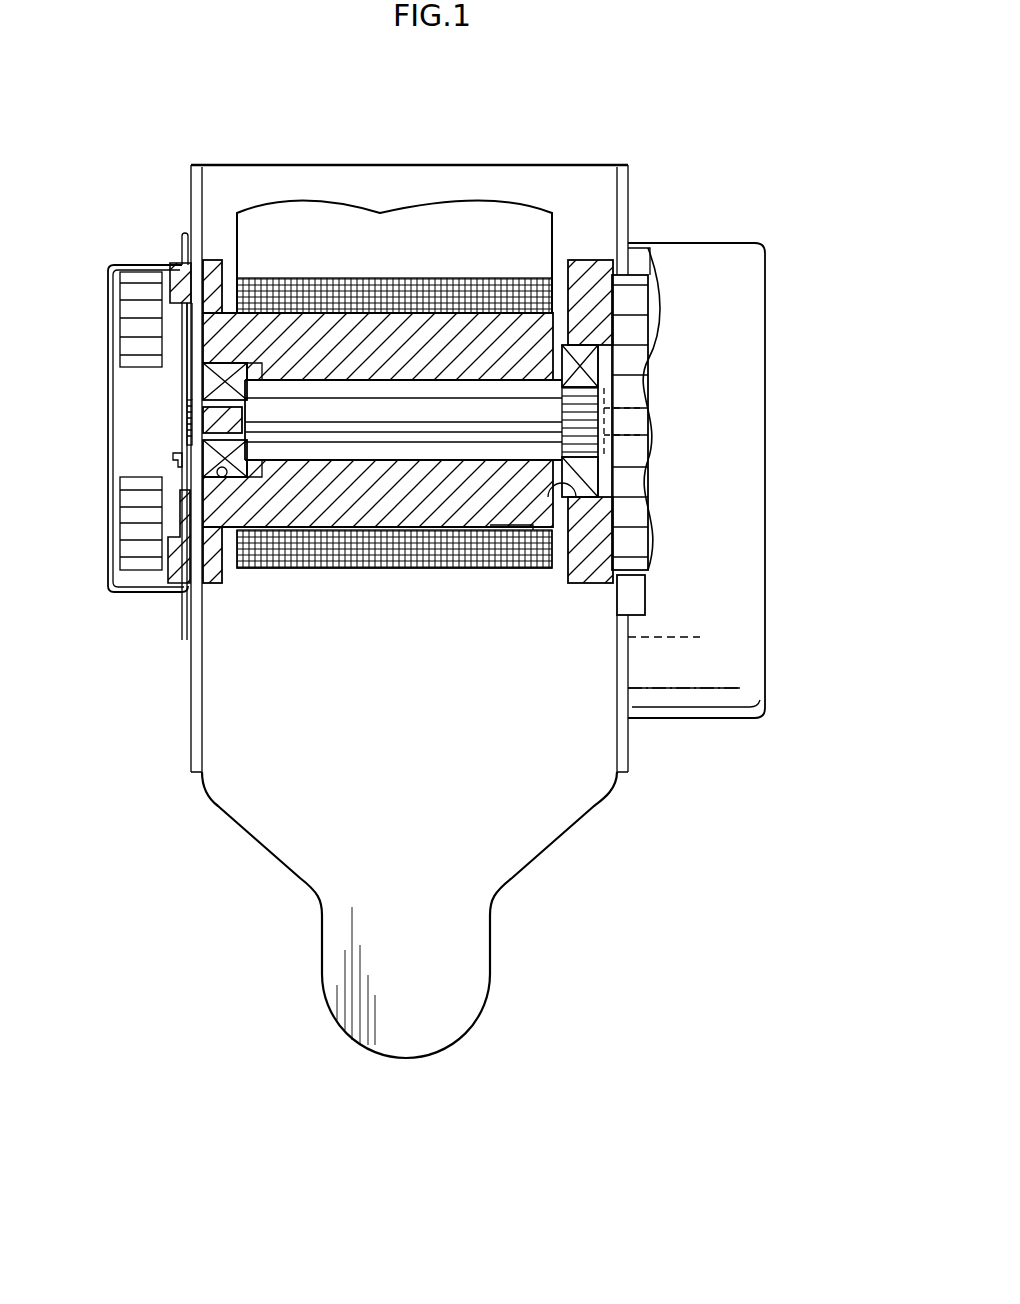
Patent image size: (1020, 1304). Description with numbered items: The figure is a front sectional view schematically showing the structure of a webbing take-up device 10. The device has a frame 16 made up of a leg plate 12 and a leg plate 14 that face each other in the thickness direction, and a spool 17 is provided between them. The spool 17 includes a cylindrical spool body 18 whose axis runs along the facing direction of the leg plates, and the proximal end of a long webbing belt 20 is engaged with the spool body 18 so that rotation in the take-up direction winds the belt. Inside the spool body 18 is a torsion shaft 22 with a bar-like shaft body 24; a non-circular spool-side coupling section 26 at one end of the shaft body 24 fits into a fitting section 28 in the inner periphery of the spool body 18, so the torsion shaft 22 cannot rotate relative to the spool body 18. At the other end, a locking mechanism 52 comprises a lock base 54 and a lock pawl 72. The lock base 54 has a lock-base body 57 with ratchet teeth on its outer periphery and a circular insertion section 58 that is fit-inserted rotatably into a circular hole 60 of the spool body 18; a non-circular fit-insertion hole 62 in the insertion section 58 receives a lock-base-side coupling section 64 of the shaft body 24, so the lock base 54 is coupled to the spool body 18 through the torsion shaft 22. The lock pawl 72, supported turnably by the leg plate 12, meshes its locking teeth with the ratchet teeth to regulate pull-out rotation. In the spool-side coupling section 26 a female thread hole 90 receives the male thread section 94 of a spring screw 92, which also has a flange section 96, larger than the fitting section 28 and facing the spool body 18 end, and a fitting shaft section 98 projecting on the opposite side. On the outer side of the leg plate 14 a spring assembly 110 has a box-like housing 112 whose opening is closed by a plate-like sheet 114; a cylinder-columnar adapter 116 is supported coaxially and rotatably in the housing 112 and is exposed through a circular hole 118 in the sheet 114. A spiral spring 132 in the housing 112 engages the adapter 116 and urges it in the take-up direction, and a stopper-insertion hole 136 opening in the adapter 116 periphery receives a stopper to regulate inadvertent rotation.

The webbing take-up device 10 is at (612, 128).
The leg plate 12 is at (628, 766).
The leg plate 14 is at (191, 768).
The frame 16 is at (532, 826).
The spool 17 is at (473, 338).
The spool body 18 is at (418, 330).
The webbing belt 20 is at (450, 215).
The torsion shaft 22 is at (413, 425).
The shaft body 24 is at (348, 445).
The spool-side coupling section 26 is at (232, 378).
The fitting section 28 is at (212, 586).
The locking mechanism 52 is at (708, 225).
The lock base 54 is at (660, 325).
The lock-base body 57 is at (640, 380).
The insertion section 58 is at (585, 355).
The circular hole 60 is at (560, 490).
The fit-insertion hole 62 is at (563, 421).
The lock-base-side coupling section 64 is at (583, 540).
The lock pawl 72 is at (630, 604).
The female thread hole 90 is at (250, 416).
The spring screw 92 is at (240, 368).
The male thread section 94 is at (268, 370).
The flange section 96 is at (183, 417).
The fitting shaft section 98 is at (185, 412).
The spring assembly 110 is at (120, 600).
The housing 112 is at (118, 265).
The sheet 114 is at (172, 283).
The adapter 116 is at (112, 462).
The circular hole 118 is at (178, 378).
The spiral spring 132 is at (150, 570).
The stopper-insertion hole 136 is at (178, 460).